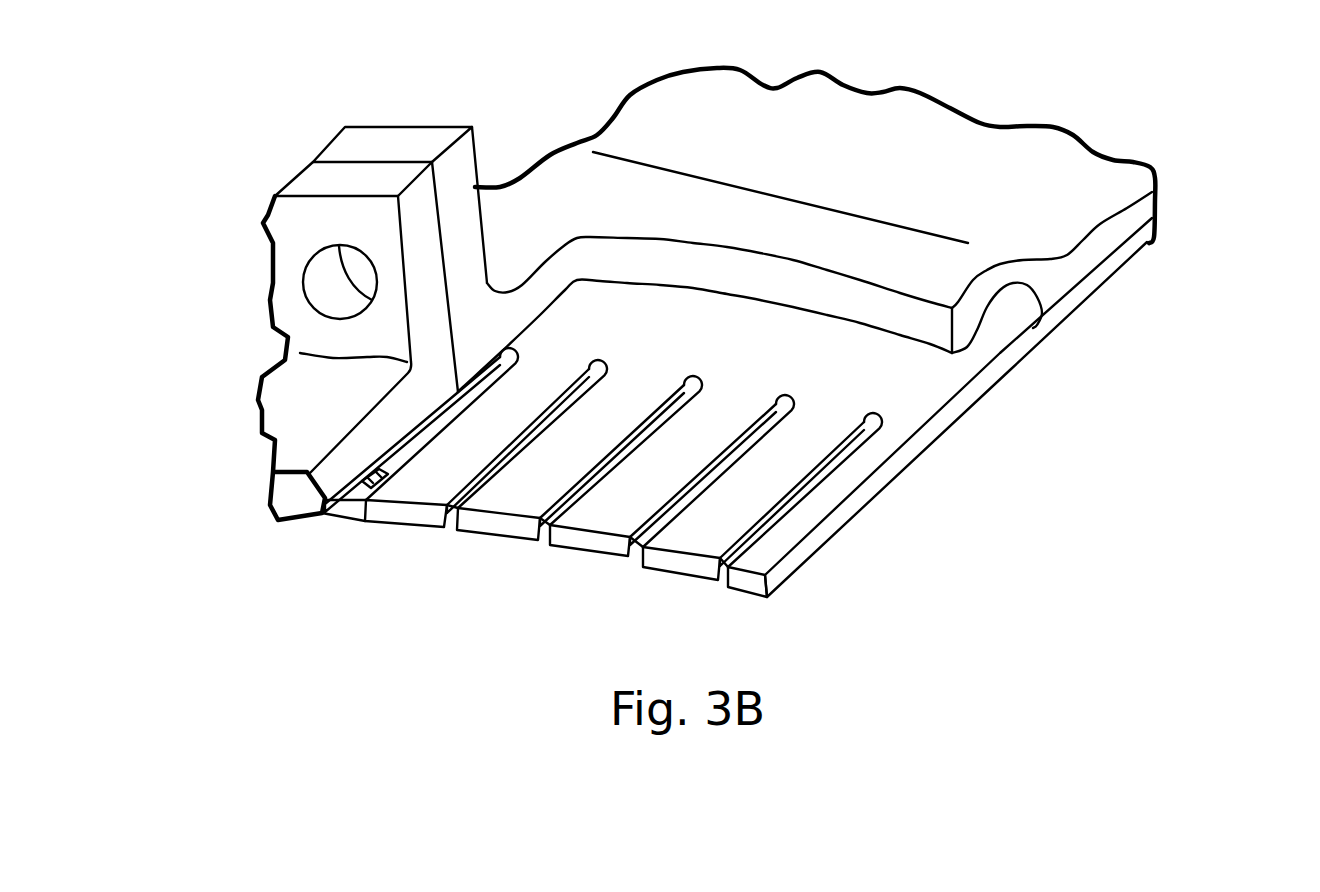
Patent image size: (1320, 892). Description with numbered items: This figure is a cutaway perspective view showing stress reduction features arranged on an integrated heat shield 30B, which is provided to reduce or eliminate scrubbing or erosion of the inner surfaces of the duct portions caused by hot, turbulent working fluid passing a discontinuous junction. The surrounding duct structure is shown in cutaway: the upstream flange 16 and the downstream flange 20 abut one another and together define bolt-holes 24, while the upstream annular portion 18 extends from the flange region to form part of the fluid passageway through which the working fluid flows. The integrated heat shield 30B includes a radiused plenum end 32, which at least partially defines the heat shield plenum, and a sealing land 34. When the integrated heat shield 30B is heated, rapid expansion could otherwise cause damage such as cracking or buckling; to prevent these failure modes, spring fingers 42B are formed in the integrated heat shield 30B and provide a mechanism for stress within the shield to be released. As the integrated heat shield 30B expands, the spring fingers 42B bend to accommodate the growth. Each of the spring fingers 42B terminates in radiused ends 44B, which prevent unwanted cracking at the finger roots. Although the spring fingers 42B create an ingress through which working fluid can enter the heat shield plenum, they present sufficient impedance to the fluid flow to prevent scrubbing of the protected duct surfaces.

The upstream flange 16 is at (420, 140).
The upstream annular portion 18 is at (1067, 191).
The downstream flange 20 is at (293, 174).
The bolt-holes 24 is at (324, 288).
The integrated heat shield 30B is at (957, 420).
The radiused plenum end 32 is at (1028, 295).
The sealing land 34 is at (358, 494).
The spring fingers 42B is at (835, 465).
The radiused ends 44B is at (783, 400).